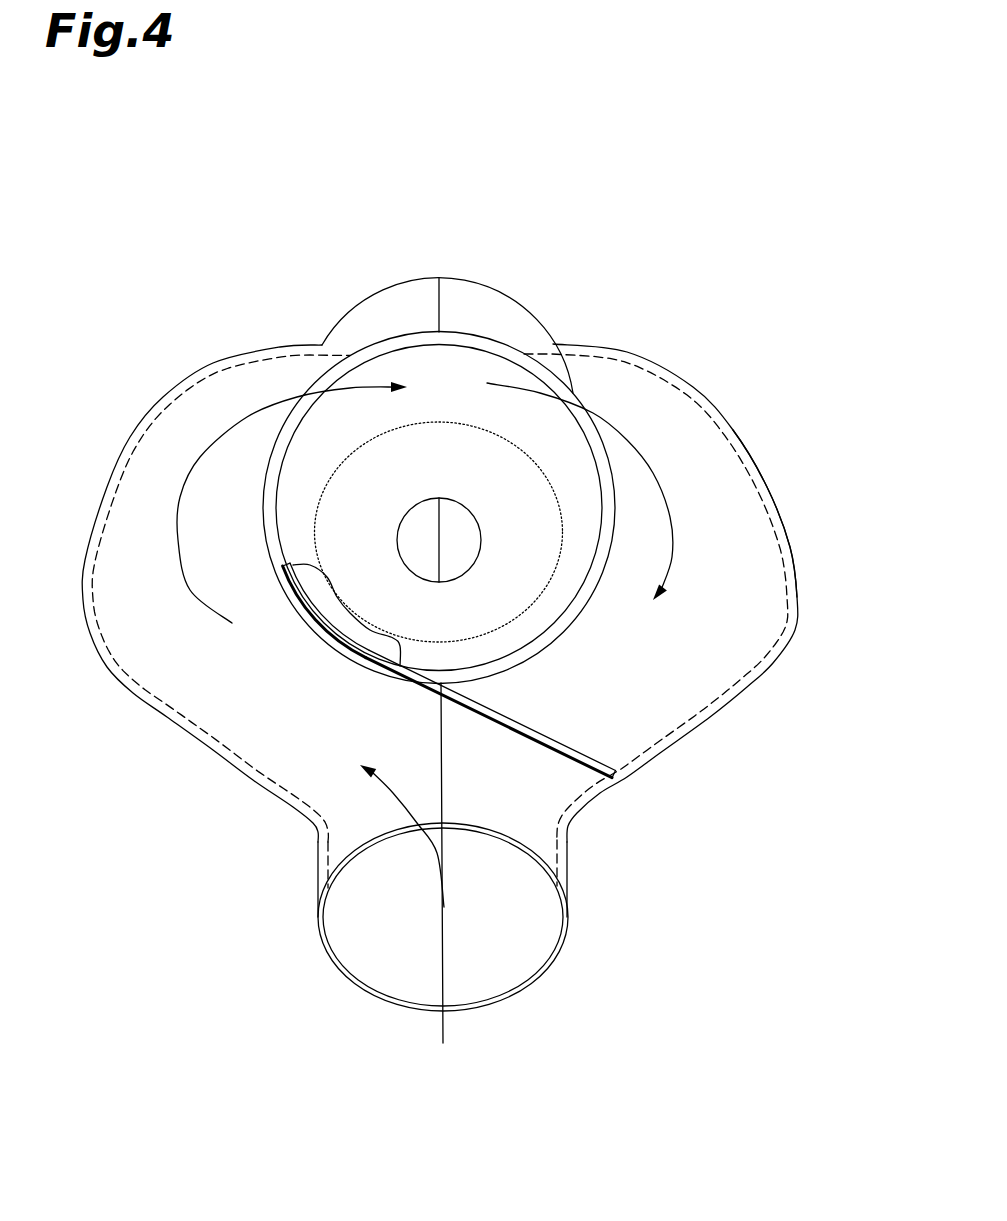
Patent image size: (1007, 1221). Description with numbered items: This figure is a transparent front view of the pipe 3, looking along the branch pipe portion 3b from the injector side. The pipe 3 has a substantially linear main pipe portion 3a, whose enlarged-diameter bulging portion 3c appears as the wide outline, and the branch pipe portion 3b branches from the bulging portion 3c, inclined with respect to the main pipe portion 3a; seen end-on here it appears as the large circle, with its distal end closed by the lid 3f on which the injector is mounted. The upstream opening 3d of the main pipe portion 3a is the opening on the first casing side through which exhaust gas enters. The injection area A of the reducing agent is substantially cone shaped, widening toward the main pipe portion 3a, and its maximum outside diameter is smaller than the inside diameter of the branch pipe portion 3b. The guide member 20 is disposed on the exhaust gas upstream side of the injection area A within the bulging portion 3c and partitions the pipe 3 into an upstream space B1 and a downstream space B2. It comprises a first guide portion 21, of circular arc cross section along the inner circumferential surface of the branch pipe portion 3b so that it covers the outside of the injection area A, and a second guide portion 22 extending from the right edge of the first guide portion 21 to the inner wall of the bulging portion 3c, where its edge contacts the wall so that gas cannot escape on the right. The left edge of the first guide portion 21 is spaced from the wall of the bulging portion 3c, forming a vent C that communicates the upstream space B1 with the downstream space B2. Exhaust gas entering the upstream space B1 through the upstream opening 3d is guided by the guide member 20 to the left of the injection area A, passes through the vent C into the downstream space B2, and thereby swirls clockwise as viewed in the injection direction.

The pipe 3 is at (730, 265).
The main pipe portion 3a is at (570, 880).
The branch pipe portion 3b is at (575, 392).
The bulging portion 3c is at (777, 513).
The upstream opening 3d is at (360, 945).
The lid 3f is at (507, 378).
The guide member 20 is at (400, 693).
The first guide portion 21 is at (313, 631).
The second guide portion 22 is at (558, 749).
The injection area A is at (338, 463).
The upstream space B1 is at (307, 747).
The downstream space B2 is at (679, 669).
The vent C is at (246, 496).